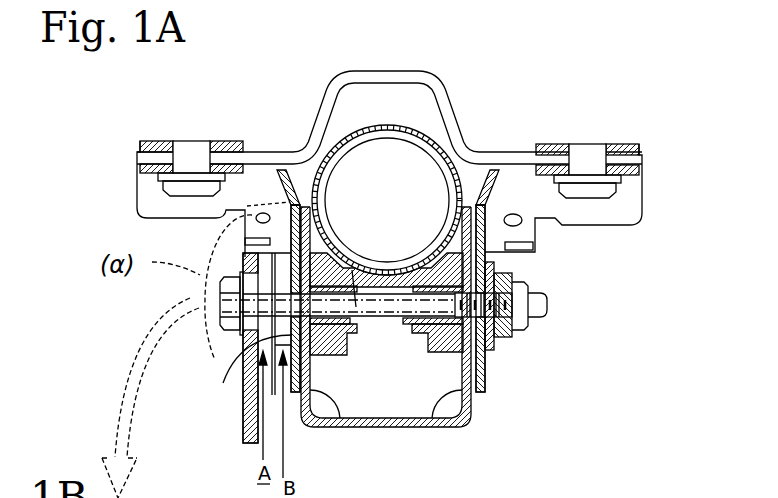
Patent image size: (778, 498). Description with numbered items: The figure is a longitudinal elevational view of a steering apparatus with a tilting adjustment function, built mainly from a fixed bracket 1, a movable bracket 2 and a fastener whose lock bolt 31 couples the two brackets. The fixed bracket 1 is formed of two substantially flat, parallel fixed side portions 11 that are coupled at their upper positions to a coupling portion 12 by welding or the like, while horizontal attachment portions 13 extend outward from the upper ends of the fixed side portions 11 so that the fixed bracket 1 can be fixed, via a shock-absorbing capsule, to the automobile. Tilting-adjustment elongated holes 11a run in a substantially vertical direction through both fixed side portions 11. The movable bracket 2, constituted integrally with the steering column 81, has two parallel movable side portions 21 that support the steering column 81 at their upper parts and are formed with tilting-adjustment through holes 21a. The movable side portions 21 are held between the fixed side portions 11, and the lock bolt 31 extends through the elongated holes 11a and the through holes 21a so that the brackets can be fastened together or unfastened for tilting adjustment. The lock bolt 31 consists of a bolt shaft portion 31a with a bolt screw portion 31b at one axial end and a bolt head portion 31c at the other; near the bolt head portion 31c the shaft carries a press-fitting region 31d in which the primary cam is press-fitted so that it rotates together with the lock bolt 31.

The fixed bracket 1 is at (482, 390).
The movable bracket 2 is at (476, 417).
The fixed side portions 11 is at (482, 368).
The tilting-adjustment elongated holes 11a is at (237, 385).
The coupling portion 12 is at (455, 108).
The attachment portions 13 is at (272, 152).
The movable side portions 21 is at (341, 420).
The tilting-adjustment through holes 21a is at (337, 333).
The lock bolt 31 is at (550, 307).
The bolt shaft portion 31a is at (391, 305).
The bolt screw portion 31b is at (508, 300).
The bolt head portion 31c is at (238, 337).
The press-fitting region 31d is at (243, 257).
The steering column 81 is at (410, 132).